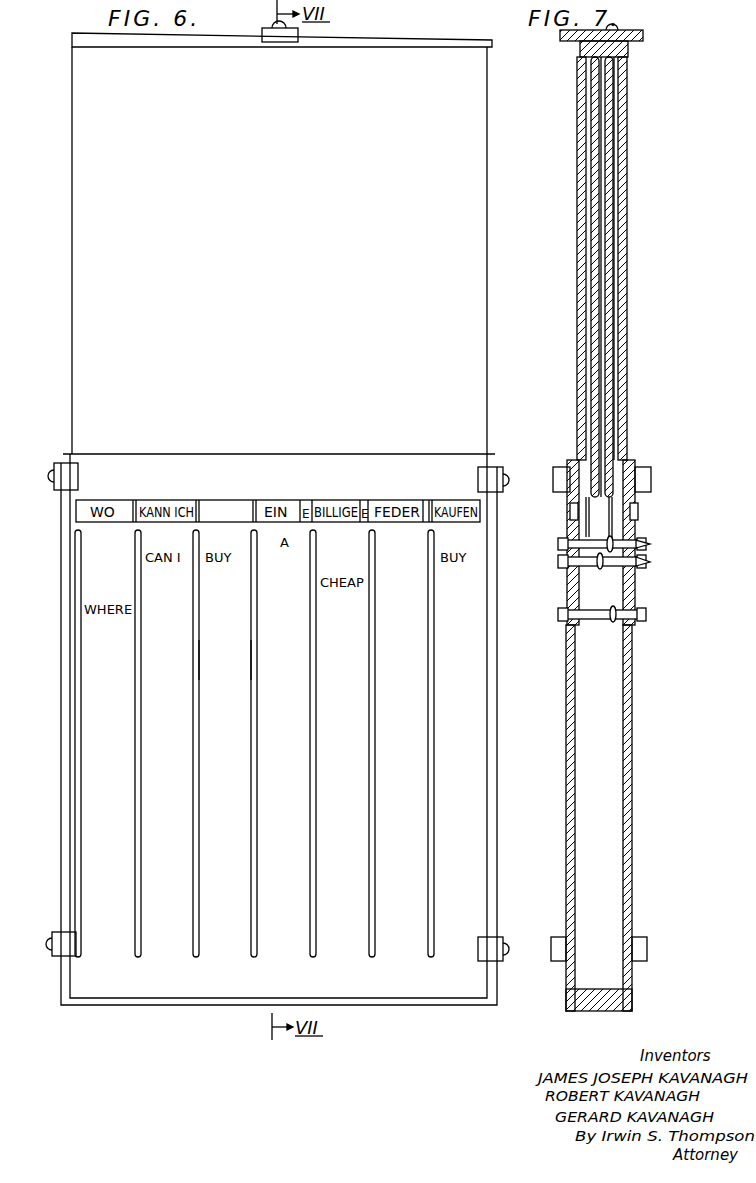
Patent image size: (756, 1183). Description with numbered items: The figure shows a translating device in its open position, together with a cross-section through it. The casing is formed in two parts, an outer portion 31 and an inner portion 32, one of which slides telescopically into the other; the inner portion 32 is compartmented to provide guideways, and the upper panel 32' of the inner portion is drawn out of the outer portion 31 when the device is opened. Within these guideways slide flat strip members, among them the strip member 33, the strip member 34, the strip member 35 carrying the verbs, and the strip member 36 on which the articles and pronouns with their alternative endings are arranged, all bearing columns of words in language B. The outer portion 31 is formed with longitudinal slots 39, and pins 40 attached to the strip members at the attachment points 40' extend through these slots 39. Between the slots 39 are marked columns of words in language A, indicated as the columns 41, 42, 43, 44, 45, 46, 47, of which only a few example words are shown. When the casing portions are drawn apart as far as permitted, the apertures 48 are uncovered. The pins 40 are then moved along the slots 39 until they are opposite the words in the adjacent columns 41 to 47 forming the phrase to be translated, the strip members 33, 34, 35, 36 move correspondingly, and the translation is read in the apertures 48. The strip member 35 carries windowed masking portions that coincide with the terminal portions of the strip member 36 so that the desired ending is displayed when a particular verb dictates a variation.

In FIG. 6, the outer casing portion 31 is at (497, 770).
In FIG. 7, the outer casing portion 31 is at (567, 878).
In FIG. 7, the inner casing portion 32 is at (585, 258).
In FIG. 6, the upper panel of sleeve 32' is at (306, 243).
In FIG. 7, the strip member 33 is at (591, 322).
In FIG. 7, the strip member 34 is at (604, 243).
In FIG. 7, the strip member carrying the verbs 35 is at (617, 233).
In FIG. 7, the strip member carrying articles and pronouns 36 is at (608, 279).
In FIG. 6, the longitudinal slots 39 is at (251, 661).
In FIG. 7, the pins 40 is at (586, 579).
In FIG. 7, the pin attachment 40' is at (666, 553).
In FIG. 6, the word column 41 is at (113, 801).
In FIG. 6, the word column 42 is at (174, 801).
In FIG. 6, the word column 43 is at (234, 801).
In FIG. 6, the word column 44 is at (295, 801).
In FIG. 6, the word column 45 is at (350, 801).
In FIG. 6, the word column 46 is at (407, 780).
In FIG. 6, the word column 47 is at (465, 781).
In FIG. 7, the apertures 48 is at (571, 511).